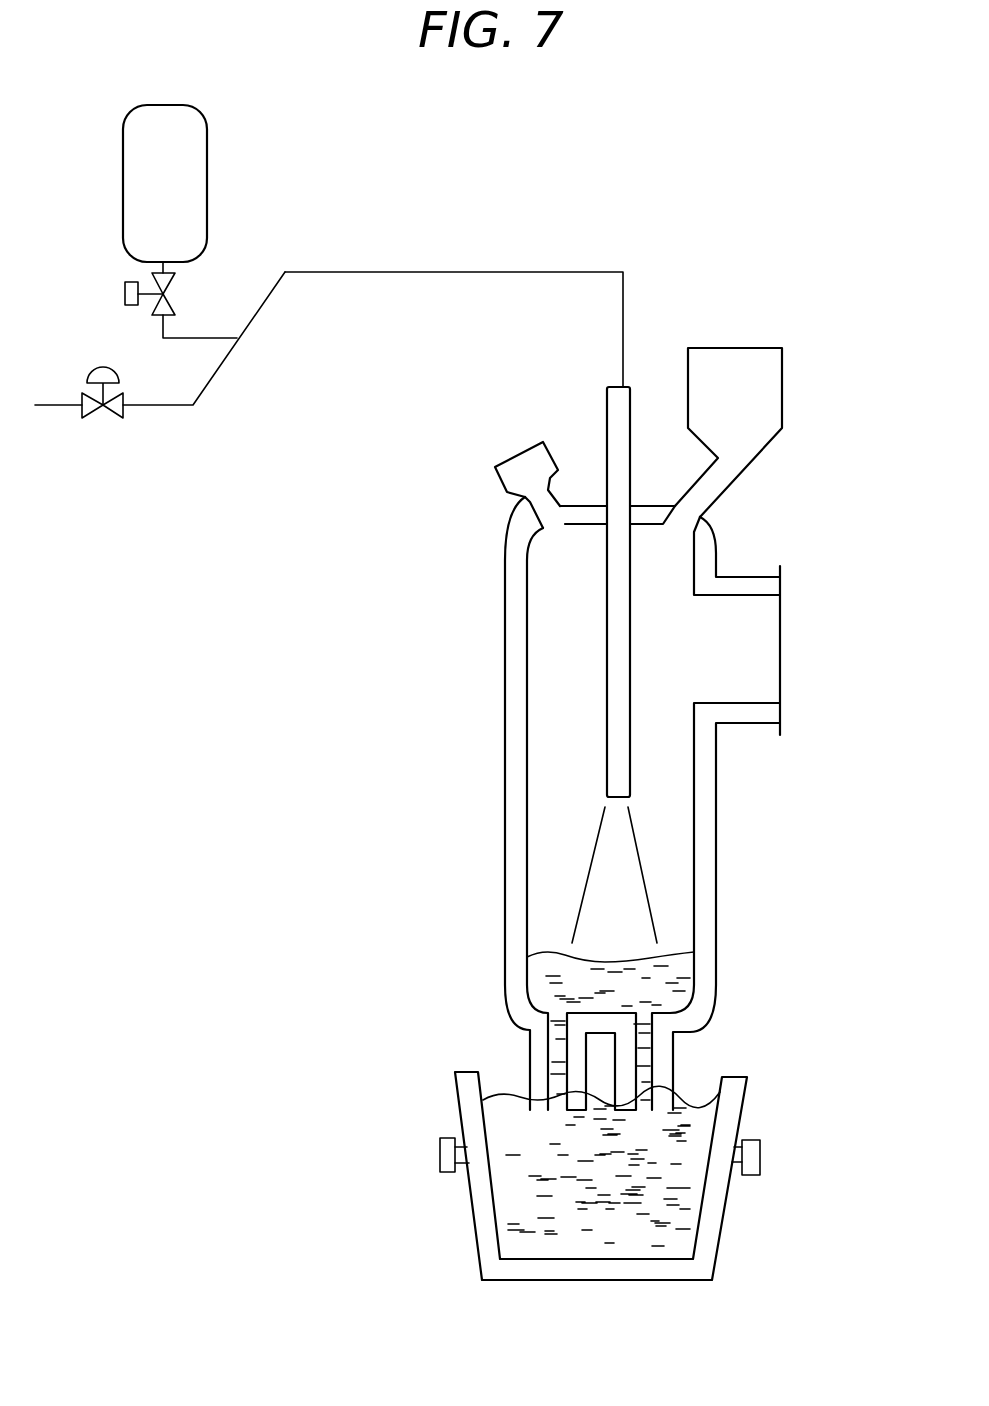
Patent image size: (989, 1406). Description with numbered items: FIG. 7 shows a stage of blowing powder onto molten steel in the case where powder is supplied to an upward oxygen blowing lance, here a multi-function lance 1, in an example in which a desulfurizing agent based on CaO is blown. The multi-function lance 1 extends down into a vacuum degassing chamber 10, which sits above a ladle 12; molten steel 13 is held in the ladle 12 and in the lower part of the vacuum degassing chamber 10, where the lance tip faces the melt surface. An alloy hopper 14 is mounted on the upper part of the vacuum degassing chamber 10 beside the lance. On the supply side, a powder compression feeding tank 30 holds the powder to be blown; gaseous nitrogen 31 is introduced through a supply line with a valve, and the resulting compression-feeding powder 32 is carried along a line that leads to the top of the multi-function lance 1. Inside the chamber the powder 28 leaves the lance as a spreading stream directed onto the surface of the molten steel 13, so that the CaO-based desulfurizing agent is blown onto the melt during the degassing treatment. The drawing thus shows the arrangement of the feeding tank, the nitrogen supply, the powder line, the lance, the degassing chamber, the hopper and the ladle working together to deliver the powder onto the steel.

The multi-function lance 1 is at (623, 425).
The vacuum degassing chamber 10 is at (450, 741).
The ladle 12 is at (482, 1214).
The molten steel 13 is at (678, 968).
The alloy hopper 14 is at (765, 396).
The powder 28 is at (627, 892).
The powder compression feeding tank 30 is at (112, 181).
The gaseous nitrogen 31 is at (154, 408).
The compression-feeding powder 32 is at (488, 271).